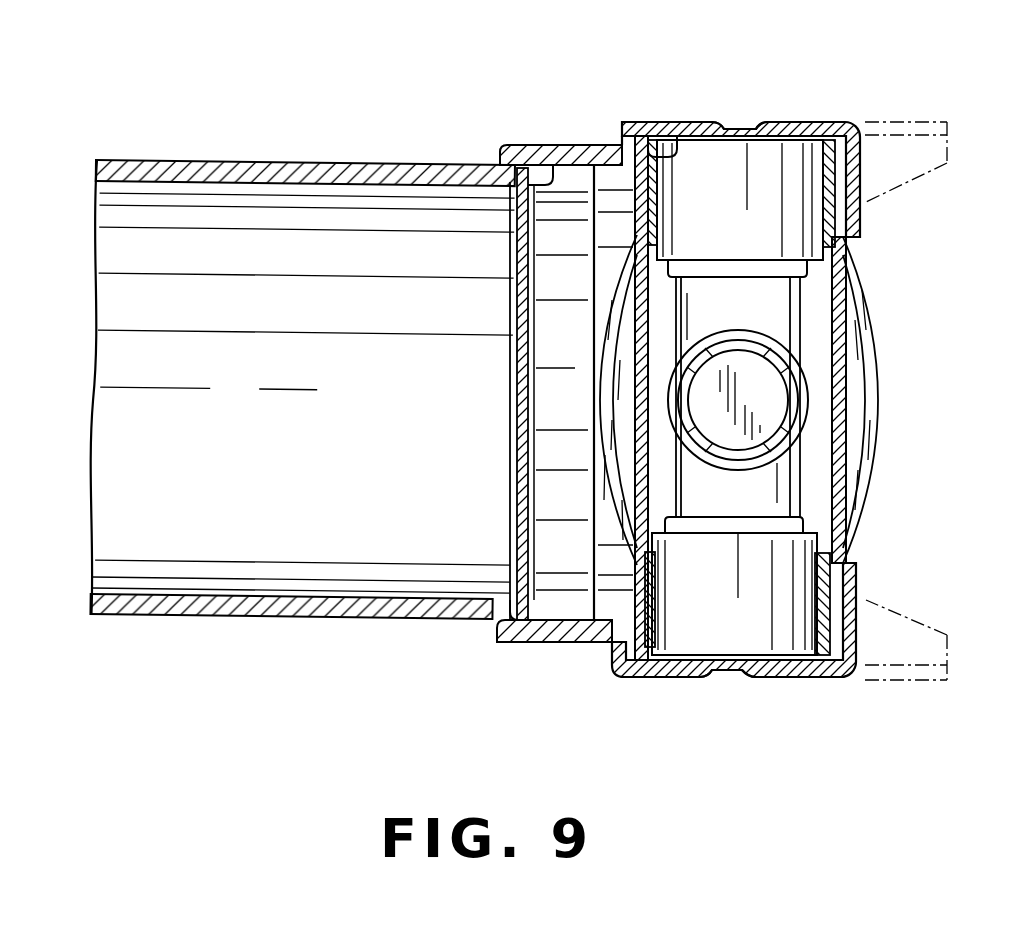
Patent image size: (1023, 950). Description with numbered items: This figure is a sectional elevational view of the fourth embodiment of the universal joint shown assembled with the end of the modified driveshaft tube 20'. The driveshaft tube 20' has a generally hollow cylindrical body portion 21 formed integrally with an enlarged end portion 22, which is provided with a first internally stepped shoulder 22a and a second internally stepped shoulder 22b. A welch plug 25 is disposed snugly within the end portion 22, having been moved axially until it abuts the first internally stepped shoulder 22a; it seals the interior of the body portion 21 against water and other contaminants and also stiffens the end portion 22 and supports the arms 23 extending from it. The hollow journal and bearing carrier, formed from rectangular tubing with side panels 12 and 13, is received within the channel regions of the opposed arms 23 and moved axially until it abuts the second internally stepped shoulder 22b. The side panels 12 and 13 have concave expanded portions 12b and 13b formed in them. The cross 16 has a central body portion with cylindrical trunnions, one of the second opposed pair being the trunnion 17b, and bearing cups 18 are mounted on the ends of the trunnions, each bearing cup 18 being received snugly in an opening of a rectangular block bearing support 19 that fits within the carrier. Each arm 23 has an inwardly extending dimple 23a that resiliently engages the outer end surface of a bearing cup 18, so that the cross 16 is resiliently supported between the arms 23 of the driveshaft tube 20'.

The side panel 12 is at (833, 285).
The concave expanded portion 12b is at (862, 470).
The side panel 13 is at (635, 303).
The concave expanded portion 13b is at (612, 440).
The cross 16 is at (787, 322).
The trunnion 17b is at (772, 412).
The bearing cup 18 is at (740, 226).
The bearing support 19 is at (628, 350).
The modified driveshaft tube 20' is at (210, 726).
The body portion 21 is at (193, 172).
The end portion 22 is at (657, 120).
The first internally stepped shoulder 22a is at (553, 167).
The second internally stepped shoulder 22b is at (672, 153).
The arm 23 is at (815, 120).
The dimple 23a is at (740, 124).
The welch plug 25 is at (545, 375).